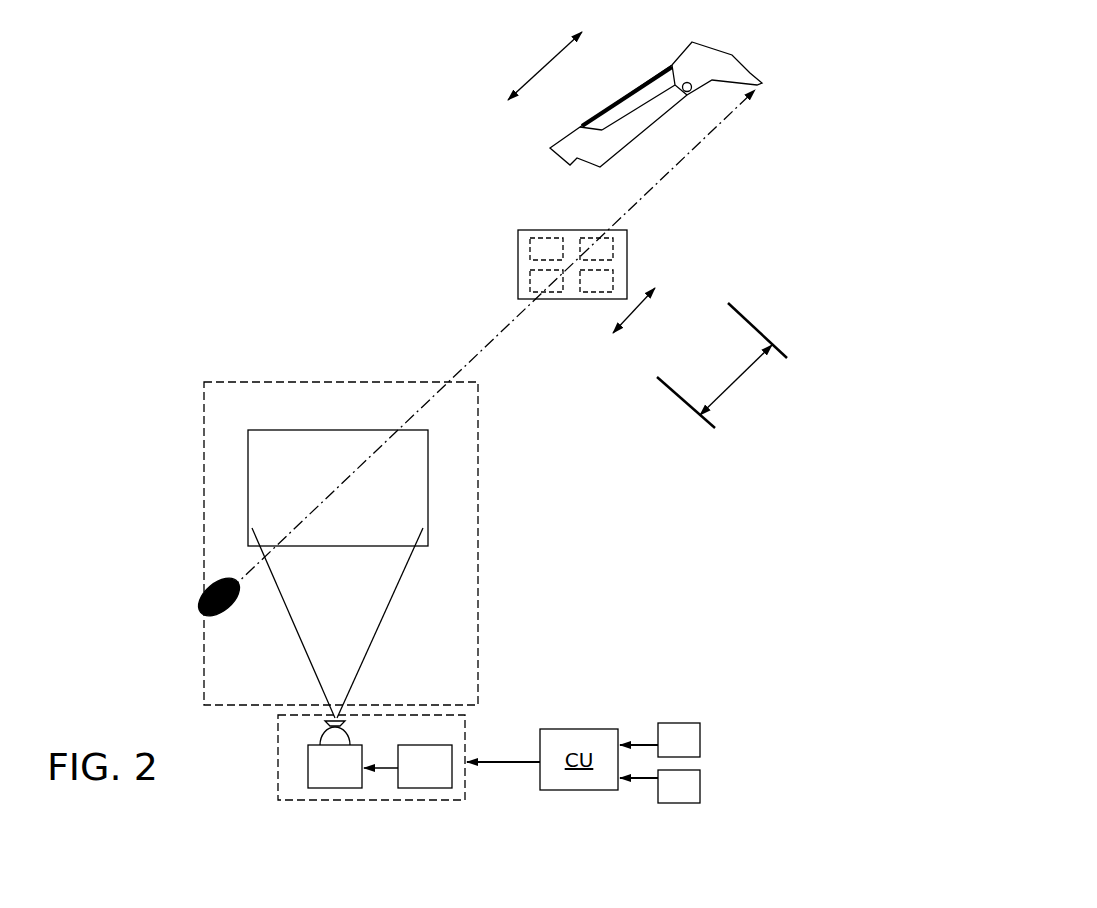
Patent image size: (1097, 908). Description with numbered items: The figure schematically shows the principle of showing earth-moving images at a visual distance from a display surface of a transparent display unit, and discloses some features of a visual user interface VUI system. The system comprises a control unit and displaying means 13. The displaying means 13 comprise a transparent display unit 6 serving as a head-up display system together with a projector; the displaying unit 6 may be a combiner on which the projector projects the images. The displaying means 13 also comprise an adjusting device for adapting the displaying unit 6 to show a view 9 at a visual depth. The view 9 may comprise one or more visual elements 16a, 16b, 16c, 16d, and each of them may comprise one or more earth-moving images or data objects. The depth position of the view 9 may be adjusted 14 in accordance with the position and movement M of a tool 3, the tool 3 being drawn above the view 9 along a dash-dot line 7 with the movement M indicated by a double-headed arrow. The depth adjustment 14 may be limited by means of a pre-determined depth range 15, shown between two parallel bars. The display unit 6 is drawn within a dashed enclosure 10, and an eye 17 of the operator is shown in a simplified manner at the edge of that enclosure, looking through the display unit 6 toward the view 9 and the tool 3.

The tool 3 is at (720, 67).
The axis / direction of movement 7 is at (673, 167).
The movement M is at (545, 66).
The view 9 is at (556, 259).
The visual element 16a is at (545, 242).
The visual element 16b is at (600, 248).
The visual element 16c is at (597, 282).
The visual element 16d is at (535, 275).
The depth adjustment 14 is at (637, 310).
The pre-determined depth range 15 is at (722, 365).
The display unit 10 is at (306, 511).
The transparent display unit 6 is at (327, 428).
The eye 17 is at (213, 583).
The displaying means 13 is at (557, 663).
The visual user interface VUI is at (697, 595).